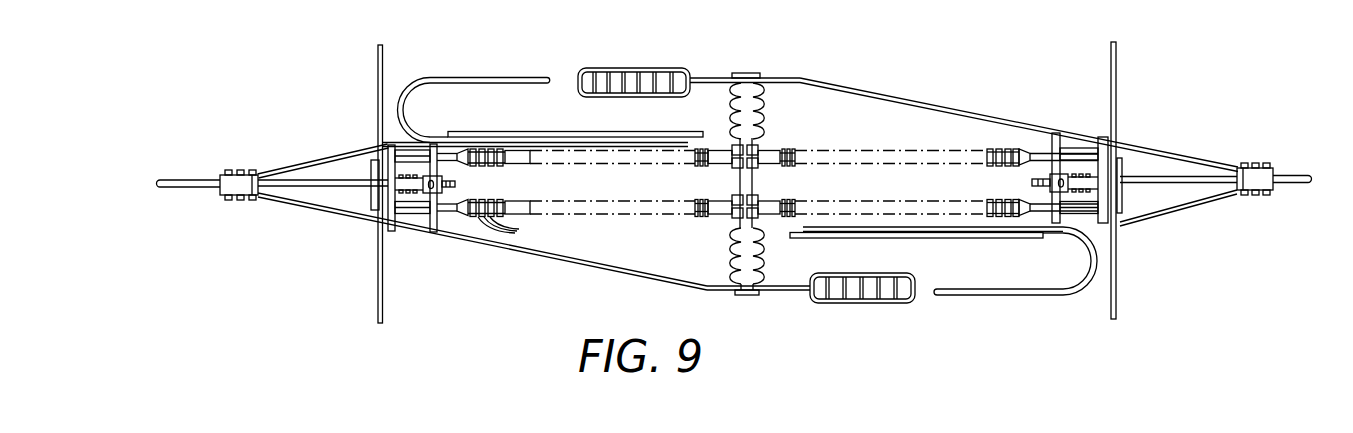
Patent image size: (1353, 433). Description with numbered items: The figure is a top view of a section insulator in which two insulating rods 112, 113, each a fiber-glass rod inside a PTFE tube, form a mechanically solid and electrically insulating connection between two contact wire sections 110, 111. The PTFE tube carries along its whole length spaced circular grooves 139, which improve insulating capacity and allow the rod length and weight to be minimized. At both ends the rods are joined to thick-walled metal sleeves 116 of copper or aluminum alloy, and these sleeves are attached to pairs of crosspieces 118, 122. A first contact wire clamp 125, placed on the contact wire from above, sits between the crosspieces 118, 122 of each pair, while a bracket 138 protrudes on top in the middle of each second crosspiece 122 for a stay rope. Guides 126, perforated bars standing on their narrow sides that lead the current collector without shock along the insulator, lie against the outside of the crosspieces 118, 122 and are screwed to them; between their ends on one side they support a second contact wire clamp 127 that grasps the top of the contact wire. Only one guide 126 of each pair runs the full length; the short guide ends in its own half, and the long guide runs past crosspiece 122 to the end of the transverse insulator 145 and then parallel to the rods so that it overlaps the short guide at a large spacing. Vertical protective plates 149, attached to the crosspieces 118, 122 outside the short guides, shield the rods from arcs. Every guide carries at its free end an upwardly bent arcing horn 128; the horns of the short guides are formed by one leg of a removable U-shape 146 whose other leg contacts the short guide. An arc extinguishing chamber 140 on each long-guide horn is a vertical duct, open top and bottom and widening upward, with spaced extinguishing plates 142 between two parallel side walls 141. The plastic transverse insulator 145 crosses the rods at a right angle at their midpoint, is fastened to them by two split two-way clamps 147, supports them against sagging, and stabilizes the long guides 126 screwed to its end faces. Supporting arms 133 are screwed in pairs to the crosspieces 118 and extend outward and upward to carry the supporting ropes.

The contact wire section 110 is at (205, 165).
The contact wire section 111 is at (1200, 175).
The insulating rod 112 is at (874, 112).
The insulating rod 113 is at (645, 226).
The thick-walled sleeve 116 is at (412, 155).
The crosspiece 118 is at (371, 205).
The crosspiece 122 is at (439, 233).
The first contact wire clamp 125 is at (395, 178).
The guide 126 is at (332, 166).
The second contact wire clamp 127 is at (243, 178).
The arcing horn 128 is at (507, 67).
The supporting arm 133 is at (384, 57).
The bracket 138 is at (452, 182).
The circular groove 139 is at (520, 232).
The arc extinguishing chamber 140 is at (700, 69).
The side wall 141 is at (649, 72).
The extinguishing plate 142 is at (640, 85).
The transverse insulator 145 is at (763, 107).
The U-shape 146 is at (398, 107).
The split two-way clamp 147 is at (736, 167).
The protective plate 149 is at (540, 134).